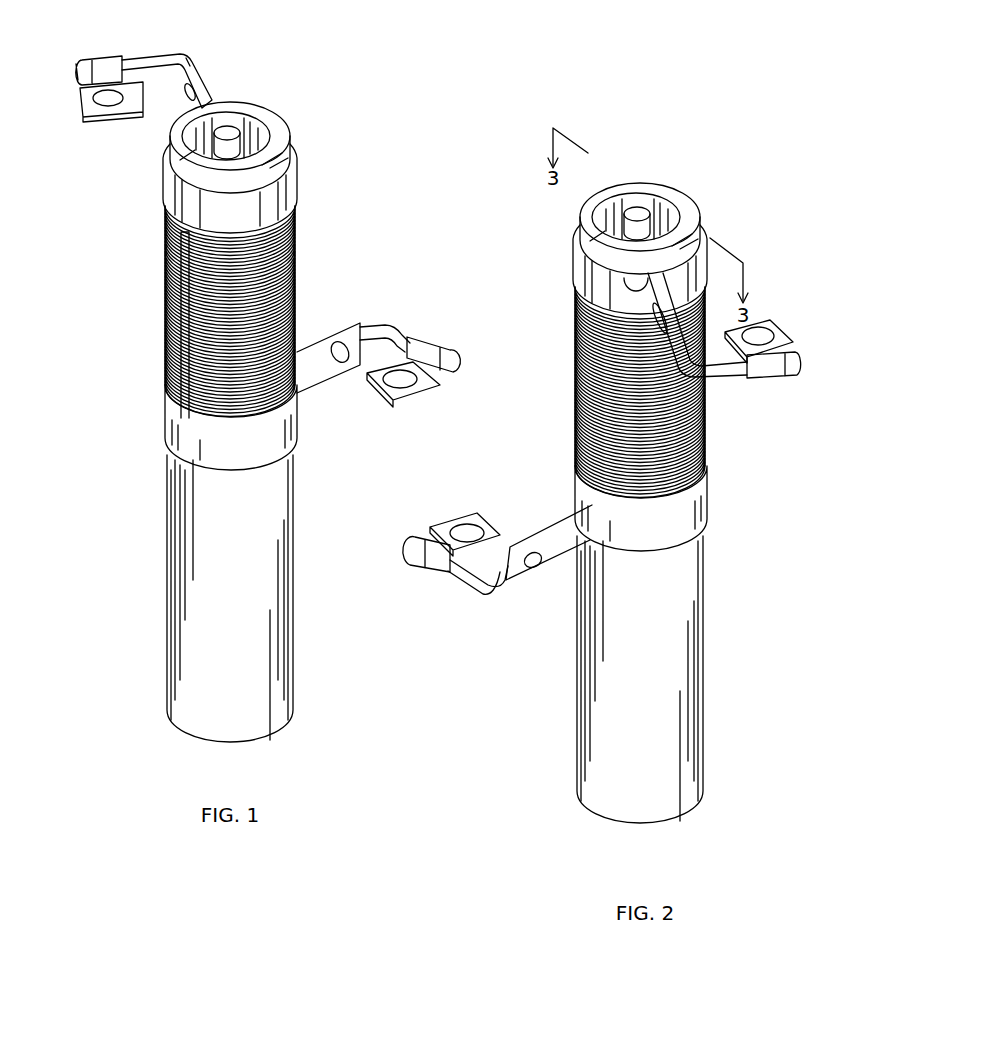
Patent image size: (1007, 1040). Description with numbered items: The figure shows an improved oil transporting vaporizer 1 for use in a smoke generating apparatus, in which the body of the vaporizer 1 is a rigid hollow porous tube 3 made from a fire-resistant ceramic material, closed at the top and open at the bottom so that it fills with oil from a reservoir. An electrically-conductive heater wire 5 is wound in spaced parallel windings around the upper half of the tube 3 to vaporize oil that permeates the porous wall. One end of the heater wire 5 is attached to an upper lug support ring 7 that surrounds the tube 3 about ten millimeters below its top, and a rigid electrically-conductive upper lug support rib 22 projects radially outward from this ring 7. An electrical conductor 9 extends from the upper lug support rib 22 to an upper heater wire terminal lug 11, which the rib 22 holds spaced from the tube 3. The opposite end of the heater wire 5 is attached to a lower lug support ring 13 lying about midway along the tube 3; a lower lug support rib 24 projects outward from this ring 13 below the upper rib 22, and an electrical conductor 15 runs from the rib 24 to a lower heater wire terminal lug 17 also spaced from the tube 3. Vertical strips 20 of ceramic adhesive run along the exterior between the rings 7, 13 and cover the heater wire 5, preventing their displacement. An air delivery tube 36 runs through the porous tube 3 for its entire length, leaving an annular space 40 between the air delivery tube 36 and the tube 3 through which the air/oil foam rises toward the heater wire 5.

In FIG. 1, the oil transporting vaporizer 1 is at (143, 491).
In FIG. 2, the oil transporting vaporizer 1 is at (728, 568).
In FIG. 1, the porous tube 3 is at (250, 592).
In FIG. 2, the porous tube 3 is at (617, 657).
In FIG. 1, the heater wire 5 is at (300, 270).
In FIG. 2, the heater wire 5 is at (578, 387).
In FIG. 1, the upper lug support ring 7 is at (290, 178).
In FIG. 2, the upper lug support ring 7 is at (580, 278).
In FIG. 1, the electrical conductor 9 is at (150, 55).
In FIG. 2, the electrical conductor 9 is at (712, 380).
In FIG. 1, the upper heater wire terminal lug 11 is at (122, 123).
In FIG. 2, the upper heater wire terminal lug 11 is at (790, 335).
In FIG. 1, the lower lug support ring 13 is at (258, 455).
In FIG. 2, the lower lug support ring 13 is at (693, 513).
In FIG. 1, the electrical conductor 15 is at (392, 326).
In FIG. 2, the electrical conductor 15 is at (502, 590).
In FIG. 1, the lower heater wire terminal lug 17 is at (430, 387).
In FIG. 2, the lower heater wire terminal lug 17 is at (443, 518).
In FIG. 1, the vertical strips of adhesive 20 is at (183, 310).
In FIG. 1, the upper lug support rib 22 is at (203, 97).
In FIG. 2, the upper lug support rib 22 is at (637, 270).
In FIG. 1, the lower lug support rib 24 is at (313, 367).
In FIG. 2, the lower lug support rib 24 is at (532, 532).
In FIG. 1, the air delivery tube 36 is at (240, 127).
In FIG. 2, the air delivery tube 36 is at (637, 205).
In FIG. 1, the annular space 40 is at (187, 137).
In FIG. 2, the annular space 40 is at (590, 210).